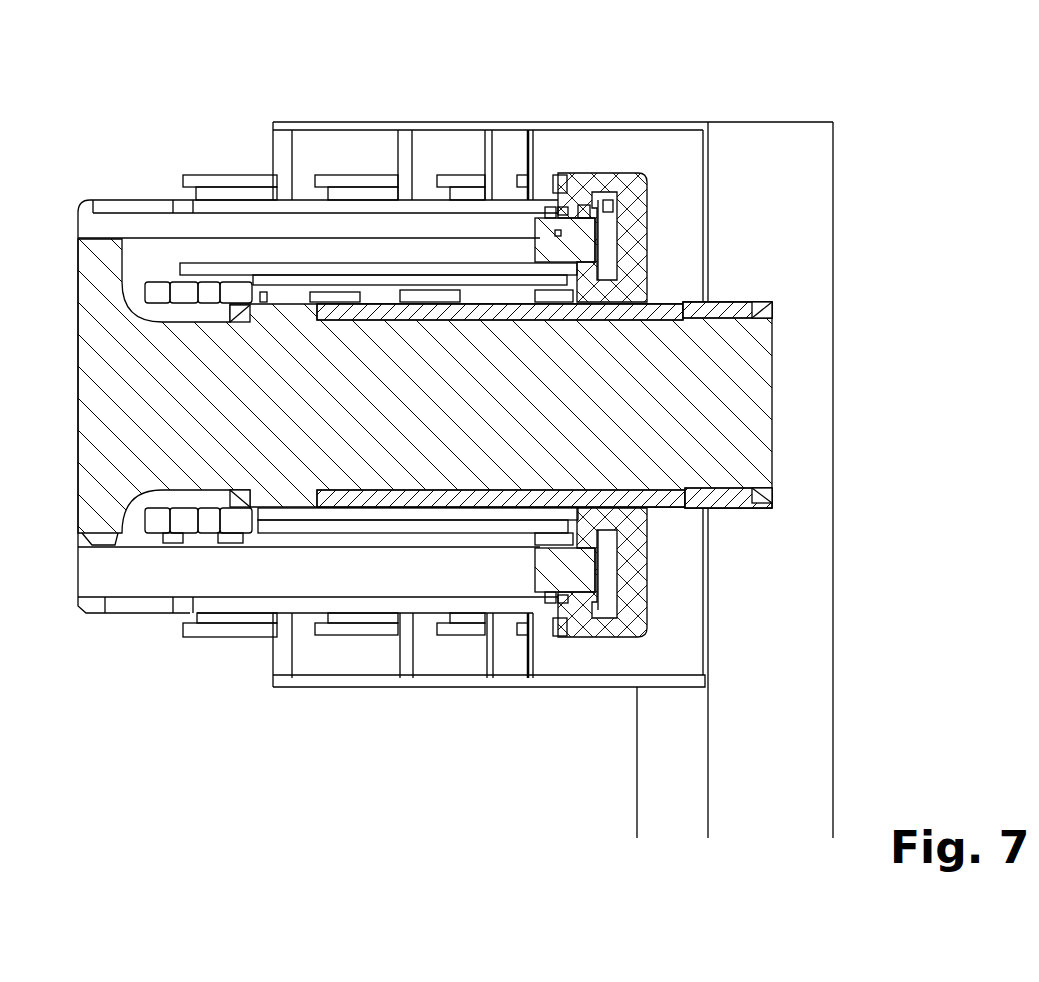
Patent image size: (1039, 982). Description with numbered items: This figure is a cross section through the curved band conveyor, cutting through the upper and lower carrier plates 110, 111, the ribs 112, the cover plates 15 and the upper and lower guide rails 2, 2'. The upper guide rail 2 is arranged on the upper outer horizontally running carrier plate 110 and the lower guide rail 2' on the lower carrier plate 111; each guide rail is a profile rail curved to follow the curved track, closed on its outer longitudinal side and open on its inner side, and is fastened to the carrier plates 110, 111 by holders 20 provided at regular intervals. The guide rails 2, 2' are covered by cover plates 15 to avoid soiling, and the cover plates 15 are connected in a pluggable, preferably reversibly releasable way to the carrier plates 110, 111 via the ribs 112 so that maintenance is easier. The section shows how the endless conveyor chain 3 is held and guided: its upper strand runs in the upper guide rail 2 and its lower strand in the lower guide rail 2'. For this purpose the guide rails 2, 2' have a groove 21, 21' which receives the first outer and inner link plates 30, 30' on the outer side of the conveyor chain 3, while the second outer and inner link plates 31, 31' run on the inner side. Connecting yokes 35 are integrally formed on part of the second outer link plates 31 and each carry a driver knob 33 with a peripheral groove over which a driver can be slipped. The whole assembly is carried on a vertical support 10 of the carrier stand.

The upper guide rail 2 is at (720, 237).
The lower guide rail 2' is at (724, 572).
The conveyor chain 3 is at (573, 206).
The vertical support 10 is at (817, 758).
The cover plate 15 is at (332, 127).
The holder 20 is at (707, 143).
The groove of upper guide rail 21 is at (745, 231).
The groove of lower guide rail 21' is at (750, 574).
The first outer link plate 30 is at (648, 131).
The first inner link plate 30' is at (610, 134).
The second outer link plate 31 is at (523, 326).
The second inner link plate 31' is at (556, 326).
The driver knob 33 is at (212, 175).
The connecting yoke 35 is at (195, 207).
The upper carrier plate 110 is at (772, 311).
The lower carrier plate 111 is at (683, 485).
The rib 112 is at (775, 370).